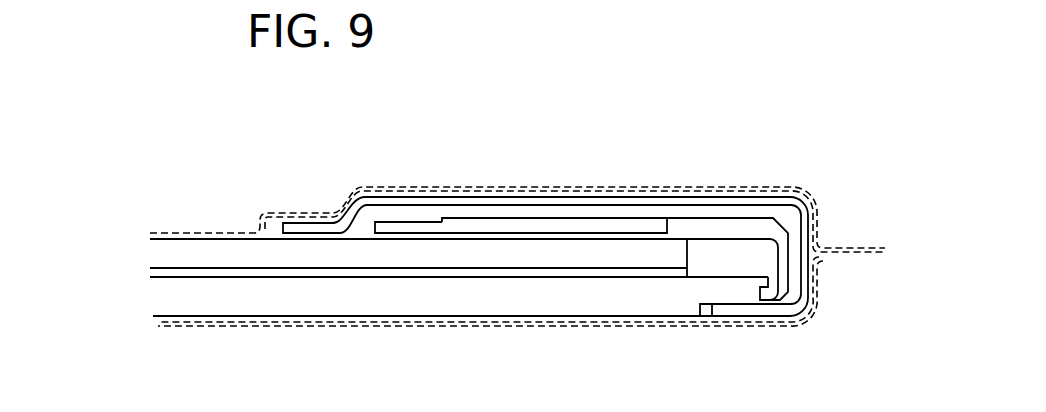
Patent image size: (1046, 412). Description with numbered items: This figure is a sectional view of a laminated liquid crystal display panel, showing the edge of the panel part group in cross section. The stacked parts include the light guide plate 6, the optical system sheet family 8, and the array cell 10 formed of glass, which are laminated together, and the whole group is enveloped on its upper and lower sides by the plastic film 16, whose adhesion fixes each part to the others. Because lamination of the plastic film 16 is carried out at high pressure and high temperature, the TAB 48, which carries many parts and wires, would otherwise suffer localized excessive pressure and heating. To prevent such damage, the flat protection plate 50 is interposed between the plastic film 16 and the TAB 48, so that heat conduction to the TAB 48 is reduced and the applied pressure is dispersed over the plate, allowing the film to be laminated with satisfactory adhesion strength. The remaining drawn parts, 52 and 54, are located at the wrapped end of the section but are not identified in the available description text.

The light guide plate 6 is at (167, 253).
The optical system sheet family 8 is at (175, 275).
The array cell 10 is at (310, 302).
The plastic film 16 is at (853, 248).
The TAB 48 is at (693, 215).
The protection plate 50 is at (398, 200).
The conductive layer 52 is at (485, 228).
The sealing member 54 is at (710, 265).